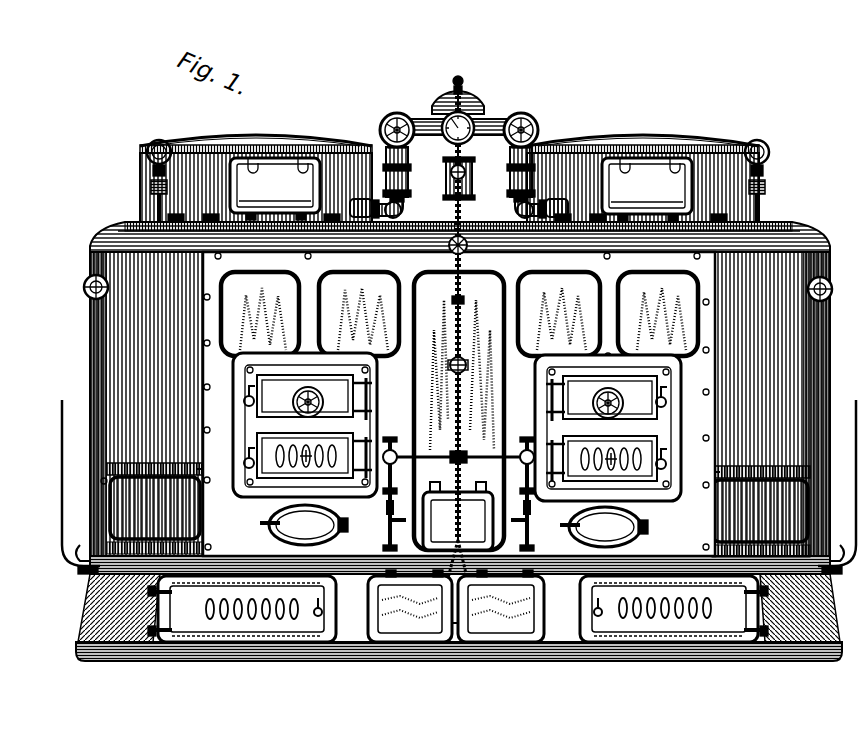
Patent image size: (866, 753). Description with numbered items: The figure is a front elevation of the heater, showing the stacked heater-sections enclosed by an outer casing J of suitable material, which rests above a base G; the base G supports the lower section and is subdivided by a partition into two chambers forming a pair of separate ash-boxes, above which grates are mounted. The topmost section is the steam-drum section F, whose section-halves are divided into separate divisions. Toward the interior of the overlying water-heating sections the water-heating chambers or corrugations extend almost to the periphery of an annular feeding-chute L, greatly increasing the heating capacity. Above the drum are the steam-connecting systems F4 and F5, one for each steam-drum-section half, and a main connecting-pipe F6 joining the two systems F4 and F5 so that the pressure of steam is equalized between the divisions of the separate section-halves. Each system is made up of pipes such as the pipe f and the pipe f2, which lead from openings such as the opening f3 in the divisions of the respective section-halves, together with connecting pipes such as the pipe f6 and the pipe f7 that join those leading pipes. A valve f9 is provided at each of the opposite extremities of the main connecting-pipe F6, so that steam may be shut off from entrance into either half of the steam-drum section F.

The annular feeding-chute L is at (305, 138).
The steam-drum section F is at (127, 233).
The outer casing J is at (90, 366).
The base G is at (95, 585).
The steam-connecting system F4 is at (408, 167).
The steam-connecting system F5 is at (510, 165).
The main connecting-pipe F6 is at (488, 129).
The pipe f7 is at (534, 124).
The valve f9 is at (389, 119).
The pipe f is at (404, 214).
The pipe f2 is at (358, 218).
The opening f3 is at (375, 218).
The pipe f6 is at (393, 218).